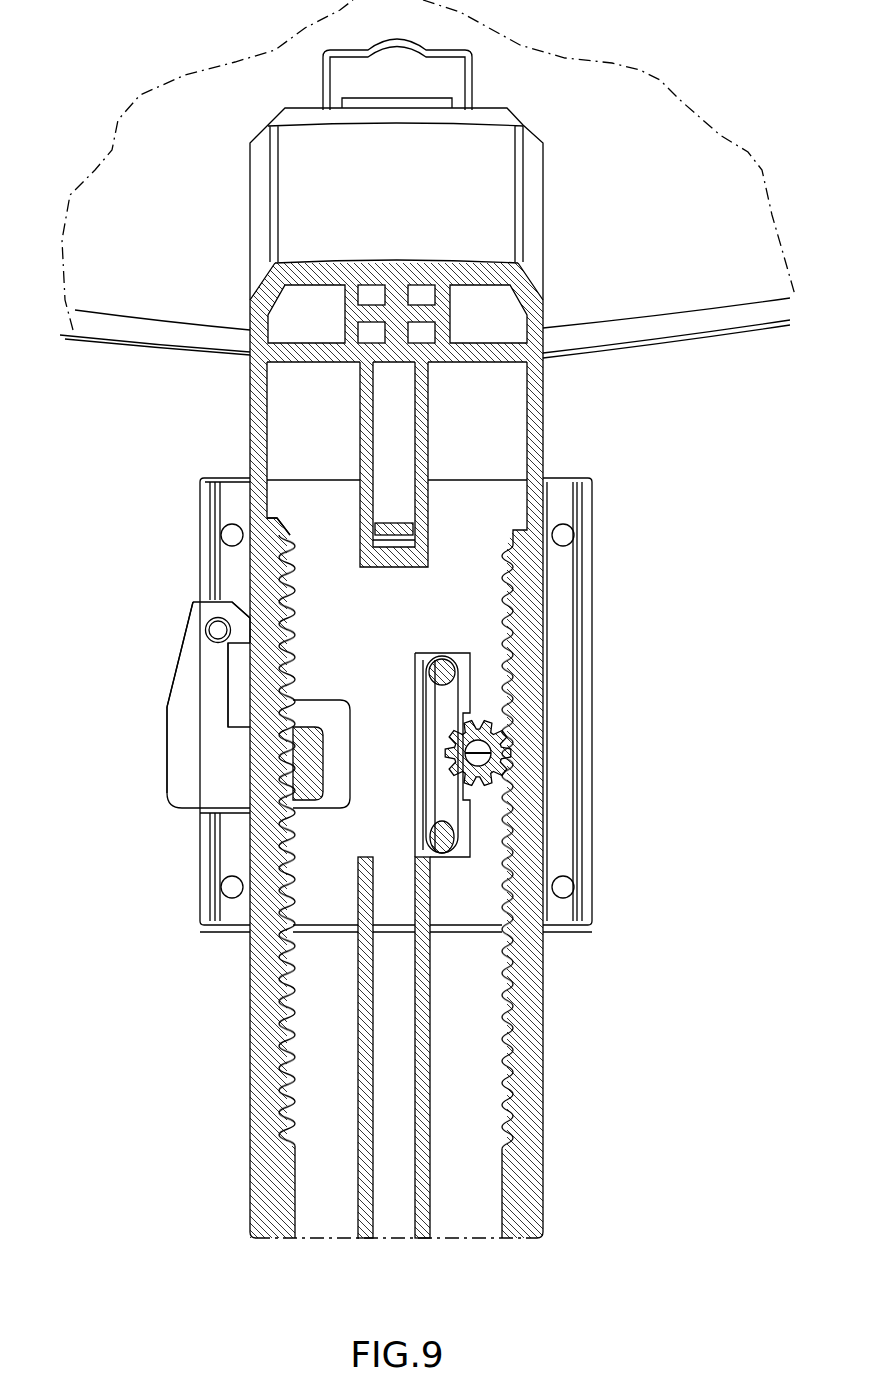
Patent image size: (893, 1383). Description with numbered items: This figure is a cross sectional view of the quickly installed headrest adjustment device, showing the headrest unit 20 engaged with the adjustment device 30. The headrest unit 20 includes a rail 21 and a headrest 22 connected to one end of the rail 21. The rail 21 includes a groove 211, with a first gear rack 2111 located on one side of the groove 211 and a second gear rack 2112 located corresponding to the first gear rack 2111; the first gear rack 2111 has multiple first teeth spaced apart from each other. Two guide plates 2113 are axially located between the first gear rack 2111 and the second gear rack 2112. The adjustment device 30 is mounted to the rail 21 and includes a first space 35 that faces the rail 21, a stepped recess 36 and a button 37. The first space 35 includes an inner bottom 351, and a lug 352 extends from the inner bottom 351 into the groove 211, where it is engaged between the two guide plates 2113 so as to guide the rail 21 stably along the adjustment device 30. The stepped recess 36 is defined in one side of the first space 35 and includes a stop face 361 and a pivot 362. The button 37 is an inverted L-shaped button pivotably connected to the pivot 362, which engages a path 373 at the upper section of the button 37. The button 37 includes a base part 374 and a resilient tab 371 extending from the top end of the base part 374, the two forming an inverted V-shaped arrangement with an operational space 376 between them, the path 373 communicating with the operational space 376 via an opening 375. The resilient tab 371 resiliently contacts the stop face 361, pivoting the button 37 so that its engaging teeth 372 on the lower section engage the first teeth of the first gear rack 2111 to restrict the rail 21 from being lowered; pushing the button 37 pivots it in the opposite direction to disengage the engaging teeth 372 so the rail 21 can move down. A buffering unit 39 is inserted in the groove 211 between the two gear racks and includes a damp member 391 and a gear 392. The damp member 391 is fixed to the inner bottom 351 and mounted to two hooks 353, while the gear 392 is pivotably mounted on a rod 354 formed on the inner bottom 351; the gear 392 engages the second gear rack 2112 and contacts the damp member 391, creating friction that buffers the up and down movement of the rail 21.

The headrest unit 20 is at (733, 5).
The rail 21 is at (487, 200).
The headrest 22 is at (612, 84).
The groove 211 is at (470, 1197).
The first gear rack 2111 is at (292, 1087).
The second gear rack 2112 is at (503, 1057).
The guide plates 2113 is at (423, 455).
The adjustment device 30 is at (605, 508).
The first space 35 is at (495, 878).
The inner bottom 351 is at (463, 897).
The lug 352 is at (390, 520).
The hooks 353 is at (442, 672).
The rod 354 is at (512, 758).
The buffering unit 39 is at (678, 620).
The damp member 391 is at (455, 832).
The gear 392 is at (482, 720).
The stepped recess 36 is at (300, 755).
The stop face 361 is at (285, 652).
The pivot 362 is at (218, 620).
The button 37 is at (175, 778).
The resilient tab 371 is at (236, 634).
The engaging teeth 372 is at (305, 775).
The path 373 is at (206, 630).
The base part 374 is at (160, 668).
The opening 375 is at (288, 615).
The operational space 376 is at (215, 715).